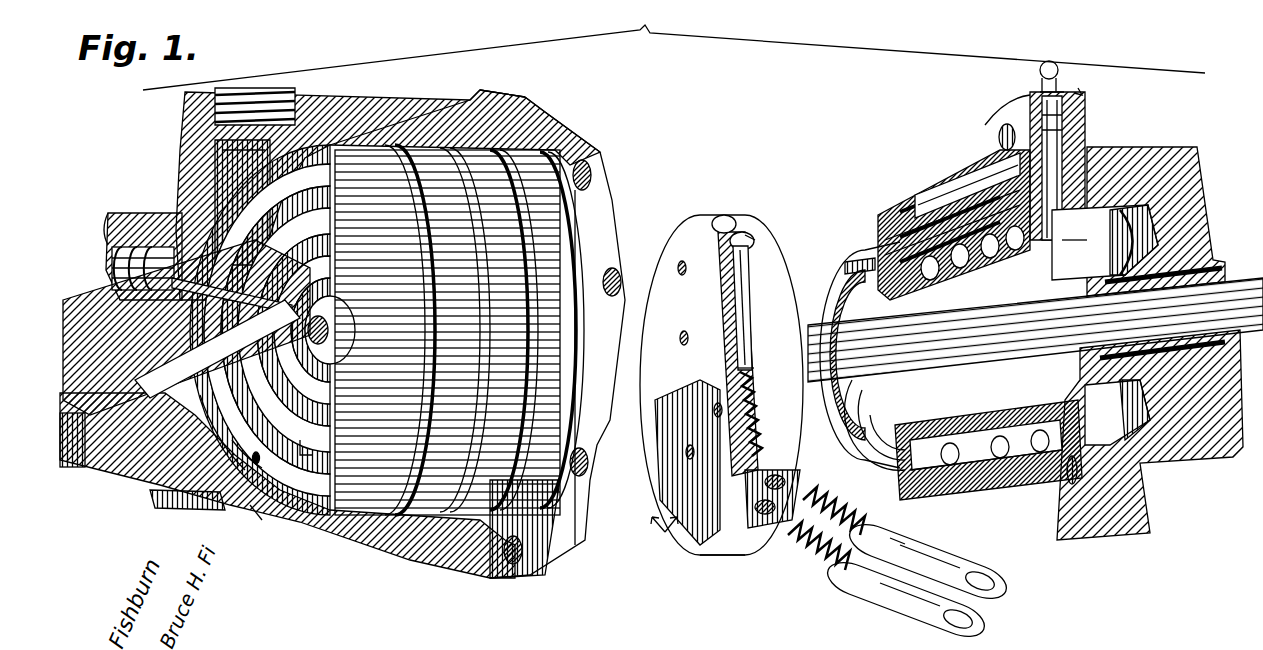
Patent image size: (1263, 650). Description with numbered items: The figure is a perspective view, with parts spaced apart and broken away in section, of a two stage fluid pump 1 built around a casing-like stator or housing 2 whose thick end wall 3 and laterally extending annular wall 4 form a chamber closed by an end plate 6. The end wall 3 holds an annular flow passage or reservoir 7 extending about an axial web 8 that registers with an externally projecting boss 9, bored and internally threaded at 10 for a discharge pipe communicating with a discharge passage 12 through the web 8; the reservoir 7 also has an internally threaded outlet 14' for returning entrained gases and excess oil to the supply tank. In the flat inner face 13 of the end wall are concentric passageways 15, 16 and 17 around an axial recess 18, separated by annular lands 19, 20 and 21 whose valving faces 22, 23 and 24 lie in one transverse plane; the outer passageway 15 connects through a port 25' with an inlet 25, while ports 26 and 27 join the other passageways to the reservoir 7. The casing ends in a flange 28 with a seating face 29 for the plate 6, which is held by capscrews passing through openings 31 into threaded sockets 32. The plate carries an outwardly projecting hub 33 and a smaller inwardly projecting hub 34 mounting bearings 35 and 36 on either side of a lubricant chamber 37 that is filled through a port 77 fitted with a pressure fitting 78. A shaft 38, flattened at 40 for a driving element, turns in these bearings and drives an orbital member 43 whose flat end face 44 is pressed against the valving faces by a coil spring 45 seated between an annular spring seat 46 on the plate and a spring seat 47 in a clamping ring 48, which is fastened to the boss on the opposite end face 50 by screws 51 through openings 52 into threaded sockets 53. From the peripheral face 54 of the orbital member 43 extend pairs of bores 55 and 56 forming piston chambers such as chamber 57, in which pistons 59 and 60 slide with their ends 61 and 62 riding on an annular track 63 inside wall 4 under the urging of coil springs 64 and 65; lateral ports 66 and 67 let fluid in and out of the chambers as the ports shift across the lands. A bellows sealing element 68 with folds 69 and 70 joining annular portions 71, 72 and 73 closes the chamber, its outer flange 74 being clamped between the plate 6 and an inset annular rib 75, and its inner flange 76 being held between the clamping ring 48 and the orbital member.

The pump 1 is at (665, 532).
The casing-like stator or housing 2 is at (240, 510).
The end wall 3 is at (190, 162).
The annular wall 4 is at (378, 116).
The end plate 6 is at (1080, 90).
The annular flow passage or reservoir 7 is at (217, 205).
The axial web 8 is at (120, 267).
The boss 9 is at (117, 212).
The internally threaded bore 10 is at (108, 238).
The discharge passage 12 is at (172, 355).
The flat inner face 13 is at (335, 345).
The internally threaded outlet 14' is at (271, 96).
The outer passageway 15 is at (167, 370).
The passageway 16 is at (294, 436).
The passageway 17 is at (345, 365).
The axial recess 18 is at (318, 304).
The annular land 19 is at (236, 430).
The annular land 20 is at (253, 456).
The annular land 21 is at (312, 280).
The valving face 22 is at (222, 400).
The valving face 23 is at (330, 385).
The valving face 24 is at (307, 320).
The inlet 25 is at (187, 520).
The port 25' is at (270, 524).
The port 26 is at (330, 400).
The port 27 is at (267, 200).
The flange 28 is at (510, 132).
The seating face 29 is at (593, 200).
The openings 31 is at (998, 120).
The threaded sockets 32 is at (522, 548).
The outwardly projecting hub 33 is at (1183, 453).
The inwardly projecting hub 34 is at (993, 483).
The bearing 35 is at (1217, 250).
The bearing 36 is at (857, 417).
The annular lubricant chamber 37 is at (1143, 432).
The shaft 38 is at (842, 303).
The flattened side 40 is at (1242, 280).
The orbital member 43 is at (678, 224).
The flat end face 44 is at (668, 434).
The coil spring 45 is at (933, 477).
The annular spring seat 46 is at (1093, 163).
The spring seat 47 is at (915, 468).
The clamping ring 48 is at (903, 221).
The end face 50 is at (760, 235).
The screws 51 is at (887, 249).
The openings 52 is at (893, 233).
The threaded sockets 53 is at (855, 265).
The peripheral face 54 is at (724, 530).
The bores 55 is at (763, 260).
The bores 56 is at (718, 221).
The variable volume piston chamber 57 is at (737, 362).
The piston 59 is at (740, 292).
The piston 60 is at (735, 218).
The piston end 61 is at (924, 626).
The piston end 62 is at (983, 585).
The annular track 63 is at (396, 128).
The coil spring 64 is at (747, 383).
The coil spring 65 is at (817, 548).
The lateral port 66 is at (680, 262).
The lateral port 67 is at (688, 323).
The flexible sealing element 68 is at (930, 185).
The fold 69 is at (927, 192).
The fold 70 is at (1092, 165).
The outer annular portion 71 is at (943, 180).
The annular portion 72 is at (977, 177).
The inner annular portion 73 is at (910, 207).
The flange 74 is at (1067, 140).
The inset annular rib 75 is at (552, 150).
The inwardly extending flange 76 is at (878, 450).
The port 77 is at (1068, 100).
The pressure fitting 78 is at (1054, 66).